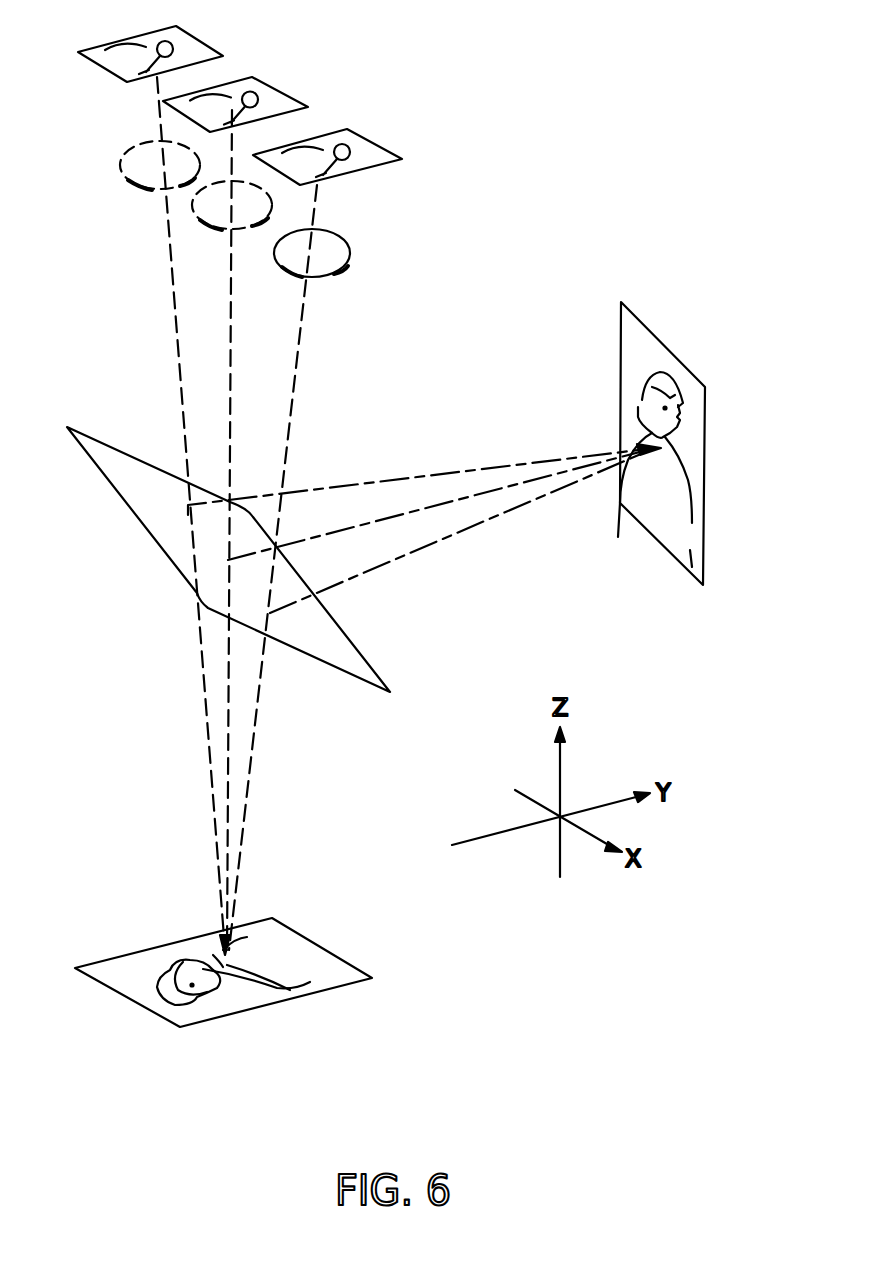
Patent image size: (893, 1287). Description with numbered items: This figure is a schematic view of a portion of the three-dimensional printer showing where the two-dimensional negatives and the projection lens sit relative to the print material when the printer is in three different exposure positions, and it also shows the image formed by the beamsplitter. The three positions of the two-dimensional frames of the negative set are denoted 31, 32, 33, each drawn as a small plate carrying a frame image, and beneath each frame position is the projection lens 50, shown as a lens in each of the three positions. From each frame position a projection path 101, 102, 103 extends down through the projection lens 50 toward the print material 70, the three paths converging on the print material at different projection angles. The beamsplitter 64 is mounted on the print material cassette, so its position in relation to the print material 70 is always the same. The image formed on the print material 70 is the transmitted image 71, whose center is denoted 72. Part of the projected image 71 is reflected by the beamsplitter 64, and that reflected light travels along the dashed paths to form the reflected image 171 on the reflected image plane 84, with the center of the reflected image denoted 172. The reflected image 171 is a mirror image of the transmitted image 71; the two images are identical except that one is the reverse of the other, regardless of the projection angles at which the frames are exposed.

The first 2D frame position 31 is at (372, 151).
The second 2D frame position 32 is at (283, 97).
The third 2D frame position 33 is at (207, 53).
The projection lens 50 is at (132, 155).
The beamsplitter 64 is at (362, 658).
The print material 70 is at (328, 960).
The image formed on the print material 71 is at (170, 970).
The center of image on print material 72 is at (277, 983).
The reflected image plane 84 is at (693, 553).
The first projection path 101 is at (303, 350).
The second projection path 102 is at (232, 350).
The third projection path 103 is at (173, 327).
The reflected image 171 is at (677, 492).
The center of reflected image 172 is at (650, 452).